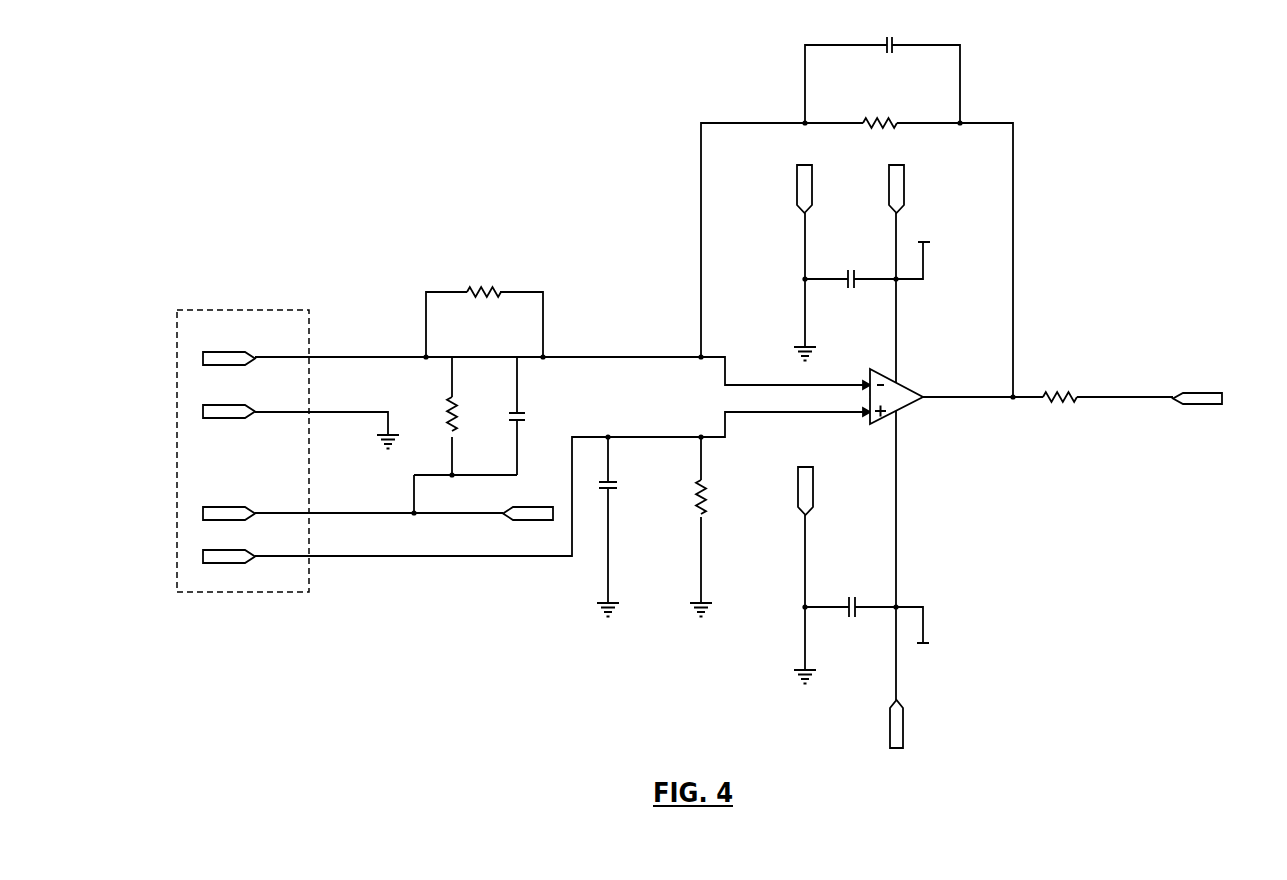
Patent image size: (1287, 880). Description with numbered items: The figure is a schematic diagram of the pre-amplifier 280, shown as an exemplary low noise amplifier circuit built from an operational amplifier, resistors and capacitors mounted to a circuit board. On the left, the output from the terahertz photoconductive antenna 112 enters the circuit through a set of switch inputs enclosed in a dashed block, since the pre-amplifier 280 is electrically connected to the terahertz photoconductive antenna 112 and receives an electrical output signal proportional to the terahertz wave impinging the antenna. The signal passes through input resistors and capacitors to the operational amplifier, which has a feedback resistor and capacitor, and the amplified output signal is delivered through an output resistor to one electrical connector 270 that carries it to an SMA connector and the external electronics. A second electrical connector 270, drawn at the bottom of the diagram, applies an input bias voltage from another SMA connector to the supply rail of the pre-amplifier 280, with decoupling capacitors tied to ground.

The terahertz photoconductive antenna 112 is at (247, 308).
The pre-amplifier 280 is at (460, 122).
The electrical connector 270 is at (1203, 390).